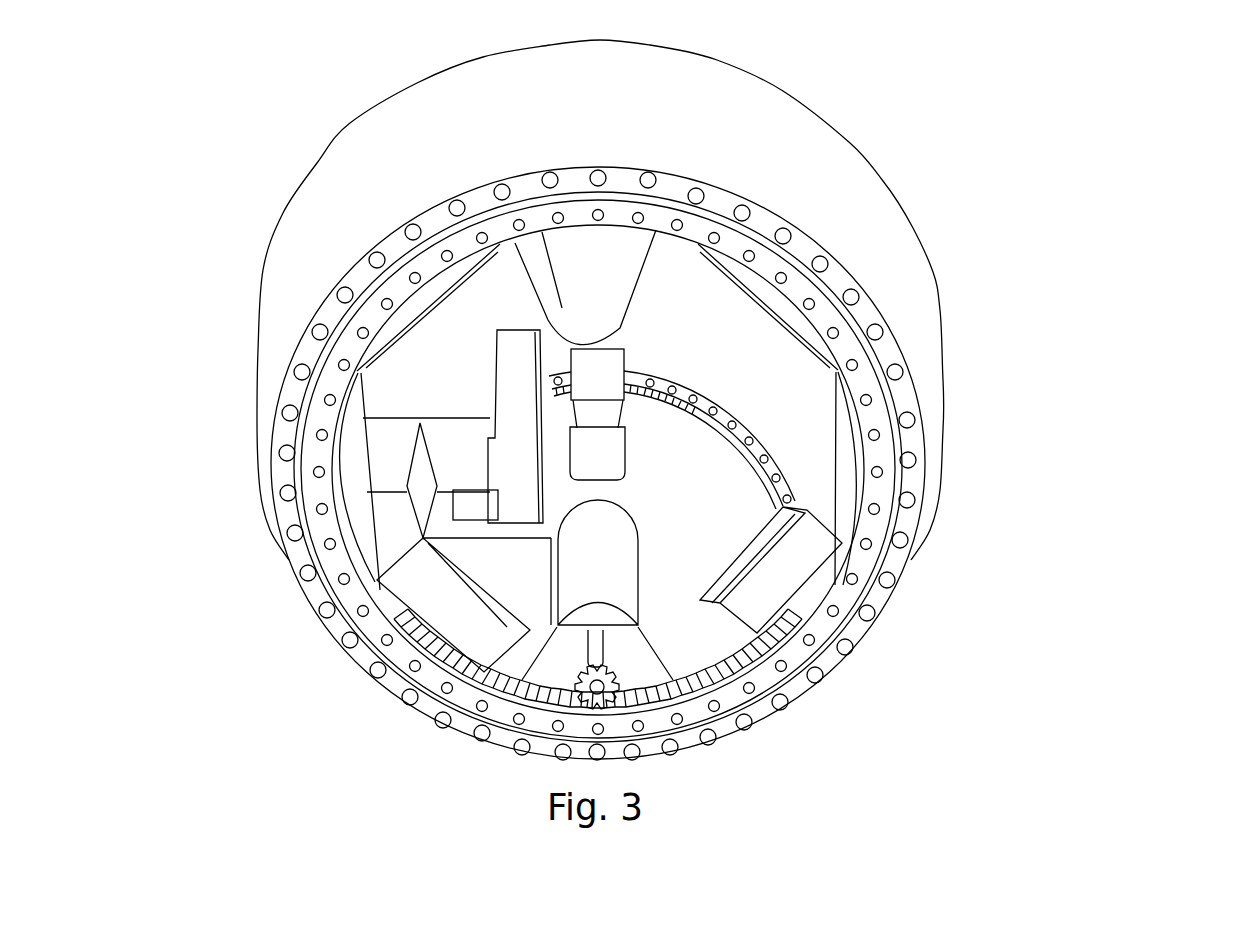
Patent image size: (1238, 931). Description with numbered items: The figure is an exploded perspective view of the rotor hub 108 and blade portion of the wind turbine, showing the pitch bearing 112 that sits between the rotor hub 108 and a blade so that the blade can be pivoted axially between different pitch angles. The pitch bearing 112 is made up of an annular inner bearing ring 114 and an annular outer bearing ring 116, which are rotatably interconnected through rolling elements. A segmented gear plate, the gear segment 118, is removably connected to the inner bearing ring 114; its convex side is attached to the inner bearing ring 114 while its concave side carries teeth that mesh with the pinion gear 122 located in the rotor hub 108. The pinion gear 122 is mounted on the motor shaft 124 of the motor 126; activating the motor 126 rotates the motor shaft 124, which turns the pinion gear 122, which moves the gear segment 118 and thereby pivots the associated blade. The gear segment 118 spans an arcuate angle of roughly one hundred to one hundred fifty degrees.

The rotor hub 108 is at (1033, 205).
The pitch bearing 112 is at (890, 316).
The inner bearing ring 114 is at (348, 592).
The outer bearing ring 116 is at (365, 658).
The gear segment 118 is at (413, 697).
The pinion gear 122 is at (738, 712).
The motor shaft 124 is at (607, 638).
The motor 126 is at (583, 525).